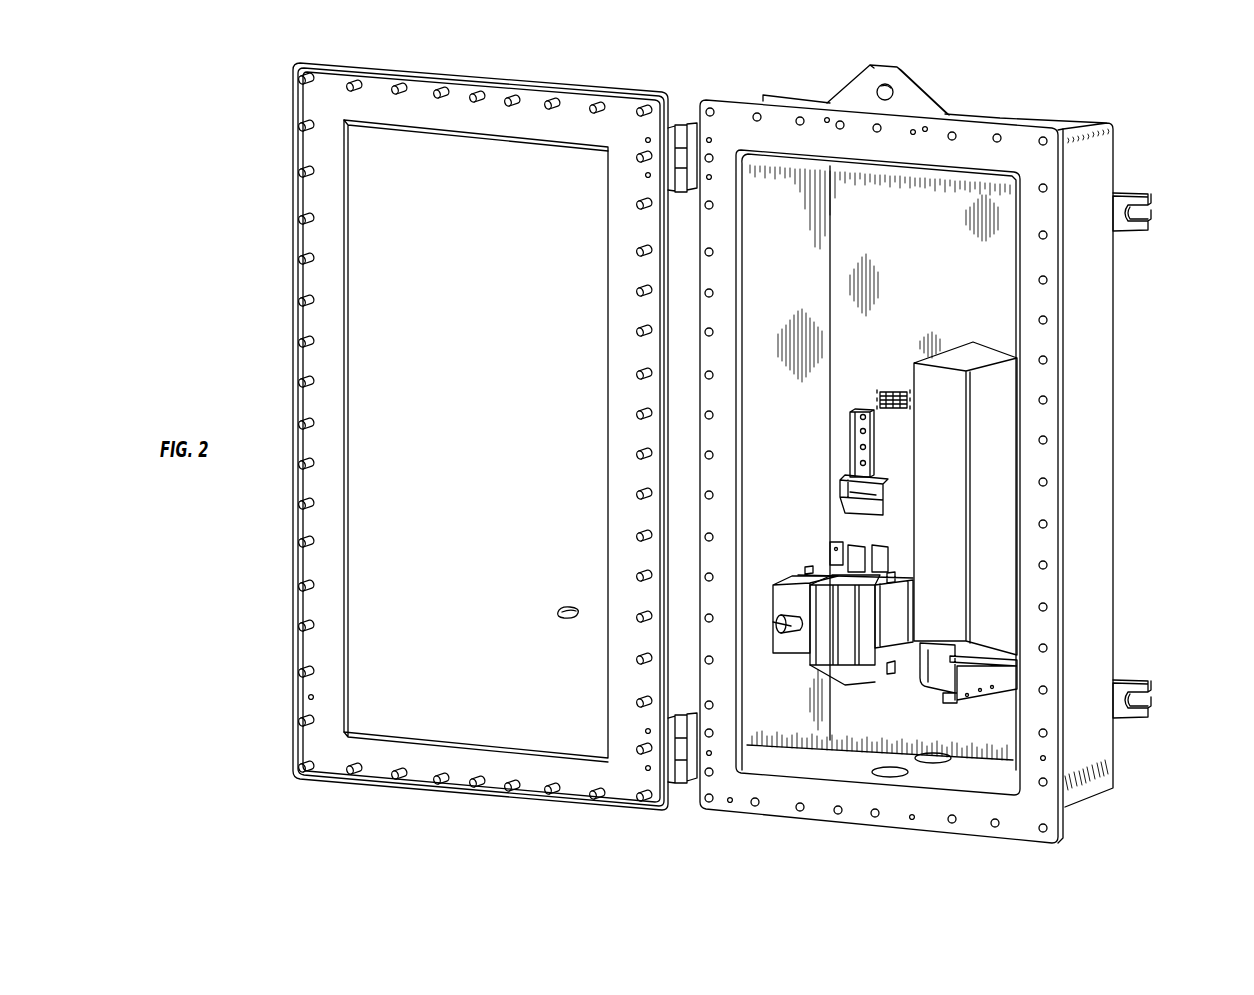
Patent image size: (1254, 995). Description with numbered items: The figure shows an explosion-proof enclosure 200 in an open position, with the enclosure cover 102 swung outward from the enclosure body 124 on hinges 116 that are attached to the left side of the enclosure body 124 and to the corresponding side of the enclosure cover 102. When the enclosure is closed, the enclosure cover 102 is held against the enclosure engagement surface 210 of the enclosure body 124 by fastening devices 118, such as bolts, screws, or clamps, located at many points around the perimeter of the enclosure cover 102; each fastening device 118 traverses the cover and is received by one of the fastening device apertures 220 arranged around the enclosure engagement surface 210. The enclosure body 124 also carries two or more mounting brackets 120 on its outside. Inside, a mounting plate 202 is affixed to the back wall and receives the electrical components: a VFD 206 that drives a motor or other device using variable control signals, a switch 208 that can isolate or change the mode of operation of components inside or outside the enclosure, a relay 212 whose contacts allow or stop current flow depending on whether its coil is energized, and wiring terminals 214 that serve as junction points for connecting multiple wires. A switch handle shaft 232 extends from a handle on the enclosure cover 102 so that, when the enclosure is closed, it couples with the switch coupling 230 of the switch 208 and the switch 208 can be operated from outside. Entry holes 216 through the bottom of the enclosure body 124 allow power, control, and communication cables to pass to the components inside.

The enclosure cover 102 is at (496, 450).
The hinges 116 is at (680, 125).
The fastening devices 118 is at (296, 304).
The mounting brackets 120 is at (1125, 231).
The enclosure body 124 is at (1113, 460).
The enclosure assembly 200 is at (1171, 74).
The mounting plate 202 is at (940, 262).
The VFD 206 is at (958, 507).
The switch 208 is at (810, 575).
The enclosure engagement surface 210 is at (1030, 252).
The relay 212 is at (838, 500).
The wiring terminals 214 is at (890, 390).
The entry holes 216 is at (935, 753).
The fastening device apertures 220 is at (1039, 359).
The switch coupling 230 is at (790, 633).
The switch handle shaft 232 is at (556, 612).